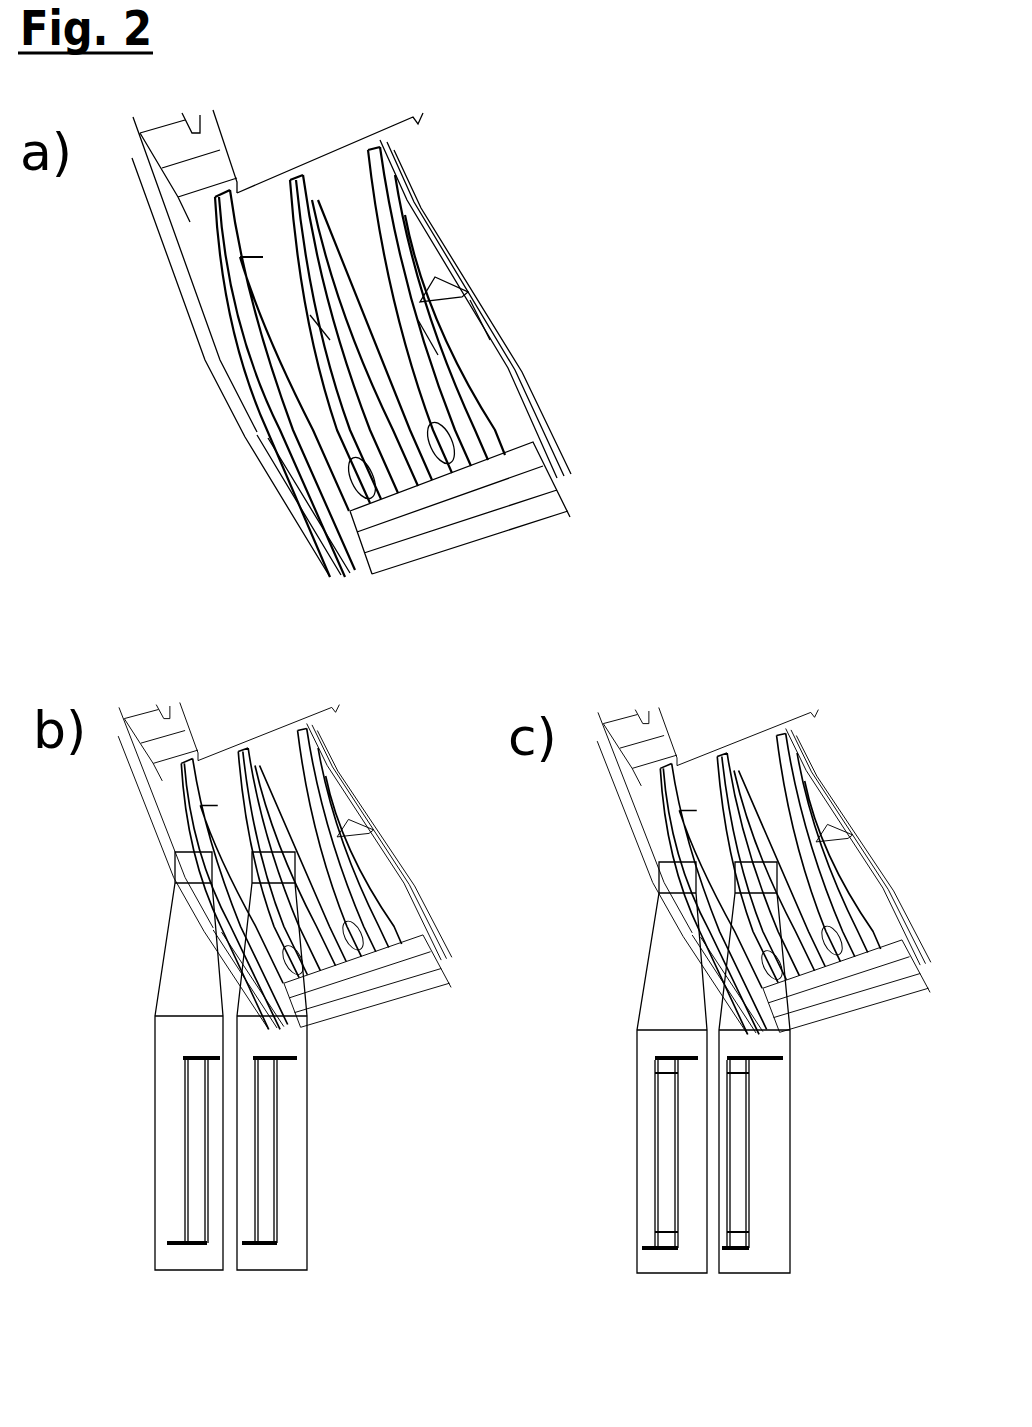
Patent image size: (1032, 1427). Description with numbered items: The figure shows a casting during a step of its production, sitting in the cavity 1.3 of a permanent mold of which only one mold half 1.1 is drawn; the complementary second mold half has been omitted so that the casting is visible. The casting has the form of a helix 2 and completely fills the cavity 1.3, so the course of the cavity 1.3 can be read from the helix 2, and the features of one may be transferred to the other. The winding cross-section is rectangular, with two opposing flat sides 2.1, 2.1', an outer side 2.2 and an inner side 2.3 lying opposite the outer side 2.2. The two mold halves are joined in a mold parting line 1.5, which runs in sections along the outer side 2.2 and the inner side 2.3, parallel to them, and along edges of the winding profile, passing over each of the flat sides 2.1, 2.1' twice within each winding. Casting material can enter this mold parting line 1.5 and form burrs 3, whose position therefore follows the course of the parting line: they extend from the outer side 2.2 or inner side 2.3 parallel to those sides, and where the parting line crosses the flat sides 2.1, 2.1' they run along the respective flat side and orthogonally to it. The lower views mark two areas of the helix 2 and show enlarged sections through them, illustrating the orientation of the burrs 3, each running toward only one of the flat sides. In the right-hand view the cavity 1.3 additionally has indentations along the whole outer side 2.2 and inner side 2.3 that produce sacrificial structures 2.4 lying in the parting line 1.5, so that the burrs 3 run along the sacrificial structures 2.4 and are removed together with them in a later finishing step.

The mold half 1.1 is at (182, 260).
The cavity 1.3 is at (410, 199).
The mold parting line 1.5 is at (337, 230).
The helix 2 is at (420, 300).
The flat side 2.1 is at (486, 391).
The flat side 2.1' is at (410, 879).
The outer side 2.2 is at (480, 312).
The inner side 2.3 is at (428, 333).
The sacrificial structure 2.4 is at (745, 1068).
The burr 3 is at (292, 1062).